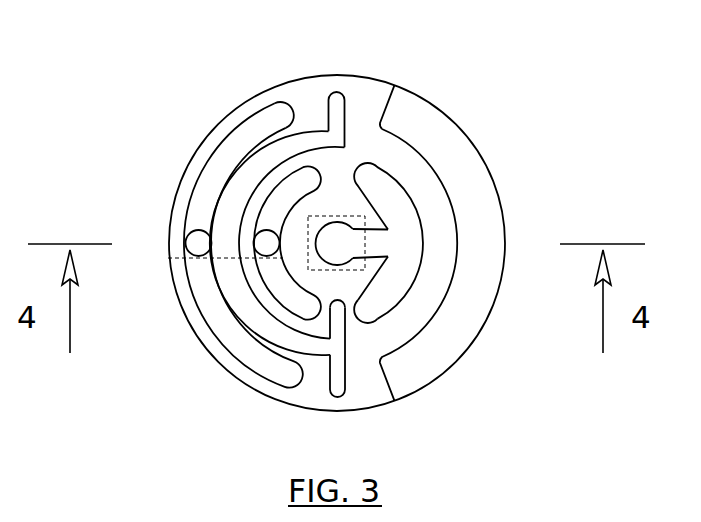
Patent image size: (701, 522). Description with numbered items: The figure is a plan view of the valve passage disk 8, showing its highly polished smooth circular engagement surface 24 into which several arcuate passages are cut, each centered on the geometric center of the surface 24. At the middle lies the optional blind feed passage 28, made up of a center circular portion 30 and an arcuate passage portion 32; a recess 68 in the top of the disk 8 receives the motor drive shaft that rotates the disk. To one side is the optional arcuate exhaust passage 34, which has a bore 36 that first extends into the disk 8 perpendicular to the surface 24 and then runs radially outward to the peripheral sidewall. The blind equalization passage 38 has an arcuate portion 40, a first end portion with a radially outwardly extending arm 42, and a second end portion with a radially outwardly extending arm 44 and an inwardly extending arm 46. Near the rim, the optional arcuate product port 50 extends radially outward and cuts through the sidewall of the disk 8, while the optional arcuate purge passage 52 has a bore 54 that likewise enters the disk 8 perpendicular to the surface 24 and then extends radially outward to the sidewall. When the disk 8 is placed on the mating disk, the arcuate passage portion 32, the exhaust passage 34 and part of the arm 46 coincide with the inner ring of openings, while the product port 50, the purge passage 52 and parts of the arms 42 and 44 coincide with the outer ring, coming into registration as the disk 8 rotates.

The valve passage disk 8 is at (354, 223).
The circular engagement surface 24 is at (408, 71).
The blind feed passage 28 is at (463, 342).
The center circular portion 30 is at (350, 253).
The arcuate passage portion 32 is at (460, 208).
The arcuate exhaust passage 34 is at (220, 198).
The bore 36 is at (199, 284).
The blind equalization passage 38 is at (221, 96).
The arcuate portion 40 is at (227, 243).
The radially outwardly extending arm 42 is at (279, 79).
The radially outwardly extending arm 44 is at (292, 383).
The inwardly extending arm 46 is at (388, 378).
The arcuate product port 50 is at (490, 265).
The arcuate purge passage 52 is at (215, 245).
The bore 54 is at (147, 217).
The recess 68 is at (461, 272).